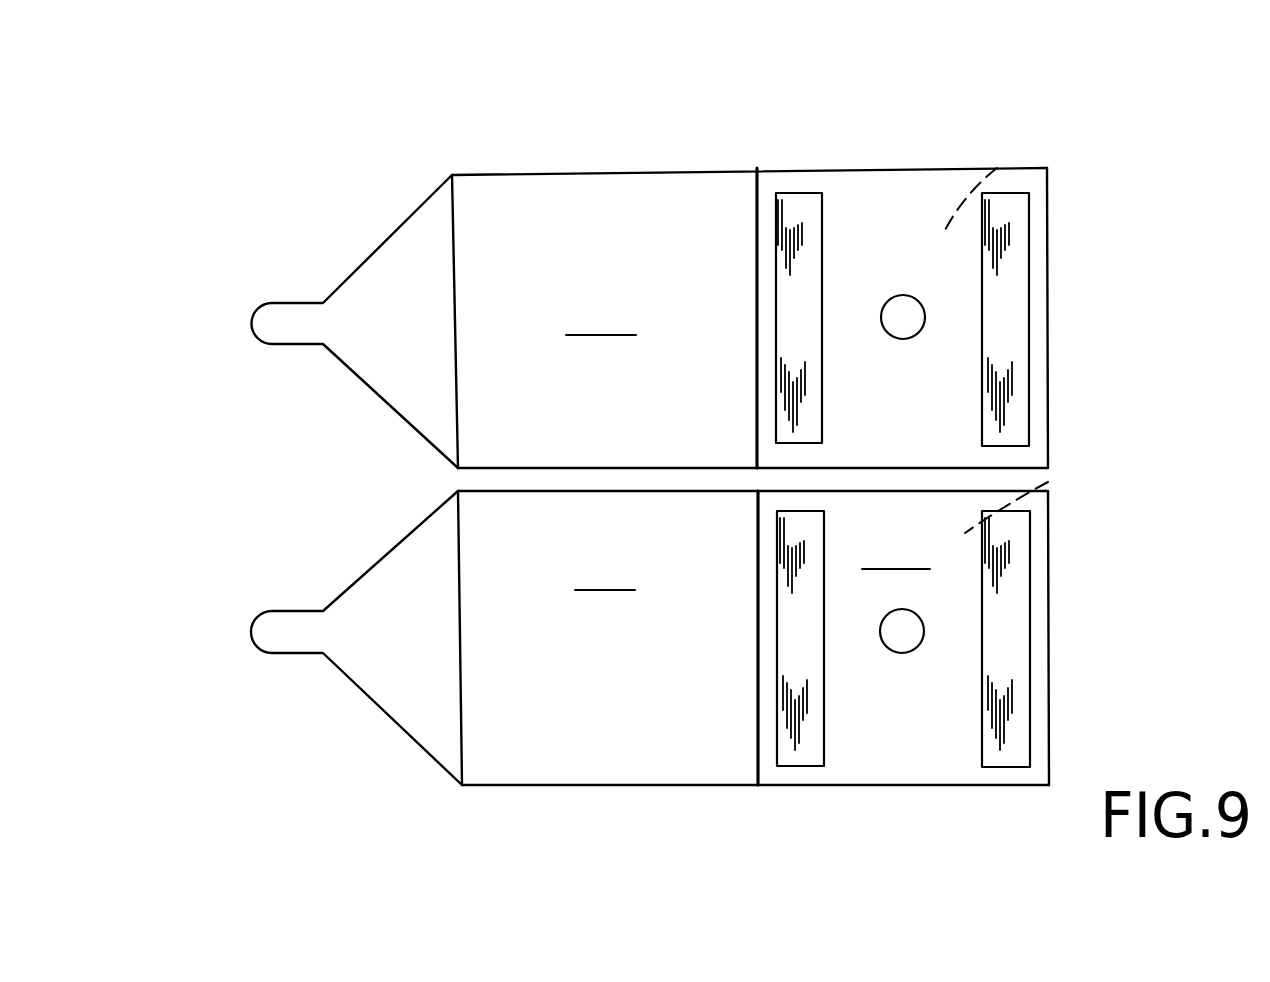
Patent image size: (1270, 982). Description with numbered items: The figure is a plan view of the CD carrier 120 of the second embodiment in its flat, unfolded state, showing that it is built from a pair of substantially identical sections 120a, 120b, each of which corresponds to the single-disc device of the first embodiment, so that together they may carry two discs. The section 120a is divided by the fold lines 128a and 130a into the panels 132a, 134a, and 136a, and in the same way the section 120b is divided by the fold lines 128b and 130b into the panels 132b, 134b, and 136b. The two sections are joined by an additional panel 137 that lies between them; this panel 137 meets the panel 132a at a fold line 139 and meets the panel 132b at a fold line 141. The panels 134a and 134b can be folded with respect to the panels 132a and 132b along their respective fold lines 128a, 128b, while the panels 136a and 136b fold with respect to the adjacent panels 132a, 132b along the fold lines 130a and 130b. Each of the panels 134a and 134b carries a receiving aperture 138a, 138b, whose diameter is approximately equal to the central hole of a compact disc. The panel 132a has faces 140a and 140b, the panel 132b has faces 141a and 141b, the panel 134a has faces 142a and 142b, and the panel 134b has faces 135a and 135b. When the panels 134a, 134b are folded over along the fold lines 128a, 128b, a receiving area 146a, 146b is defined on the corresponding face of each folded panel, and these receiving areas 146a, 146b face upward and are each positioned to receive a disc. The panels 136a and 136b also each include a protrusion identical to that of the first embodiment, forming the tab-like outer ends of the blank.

The CD carrier 120 is at (1050, 83).
The section 120a is at (1050, 610).
The section 120b is at (1048, 313).
The fold line 128a is at (757, 652).
The fold line 128b is at (757, 280).
The fold line 130a is at (463, 688).
The fold line 130b is at (455, 250).
The panel 132a is at (572, 743).
The panel 132b is at (615, 220).
The panel 134a is at (915, 732).
The panel 134b is at (897, 203).
The face 135a is at (927, 205).
The face 135b is at (997, 168).
The panel 136a is at (395, 673).
The panel 136b is at (405, 263).
The additional panel 137 is at (495, 477).
The receiving aperture 138a is at (925, 627).
The receiving aperture 138b is at (923, 307).
The fold line 139 is at (525, 492).
The face 140a is at (617, 572).
The face 140b is at (563, 693).
The fold line 141 is at (545, 466).
The face 141a is at (602, 317).
The face 141b is at (565, 250).
The face 142a is at (902, 550).
The face 142b is at (1048, 482).
The receiving area 146a is at (942, 668).
The receiving area 146b is at (932, 388).